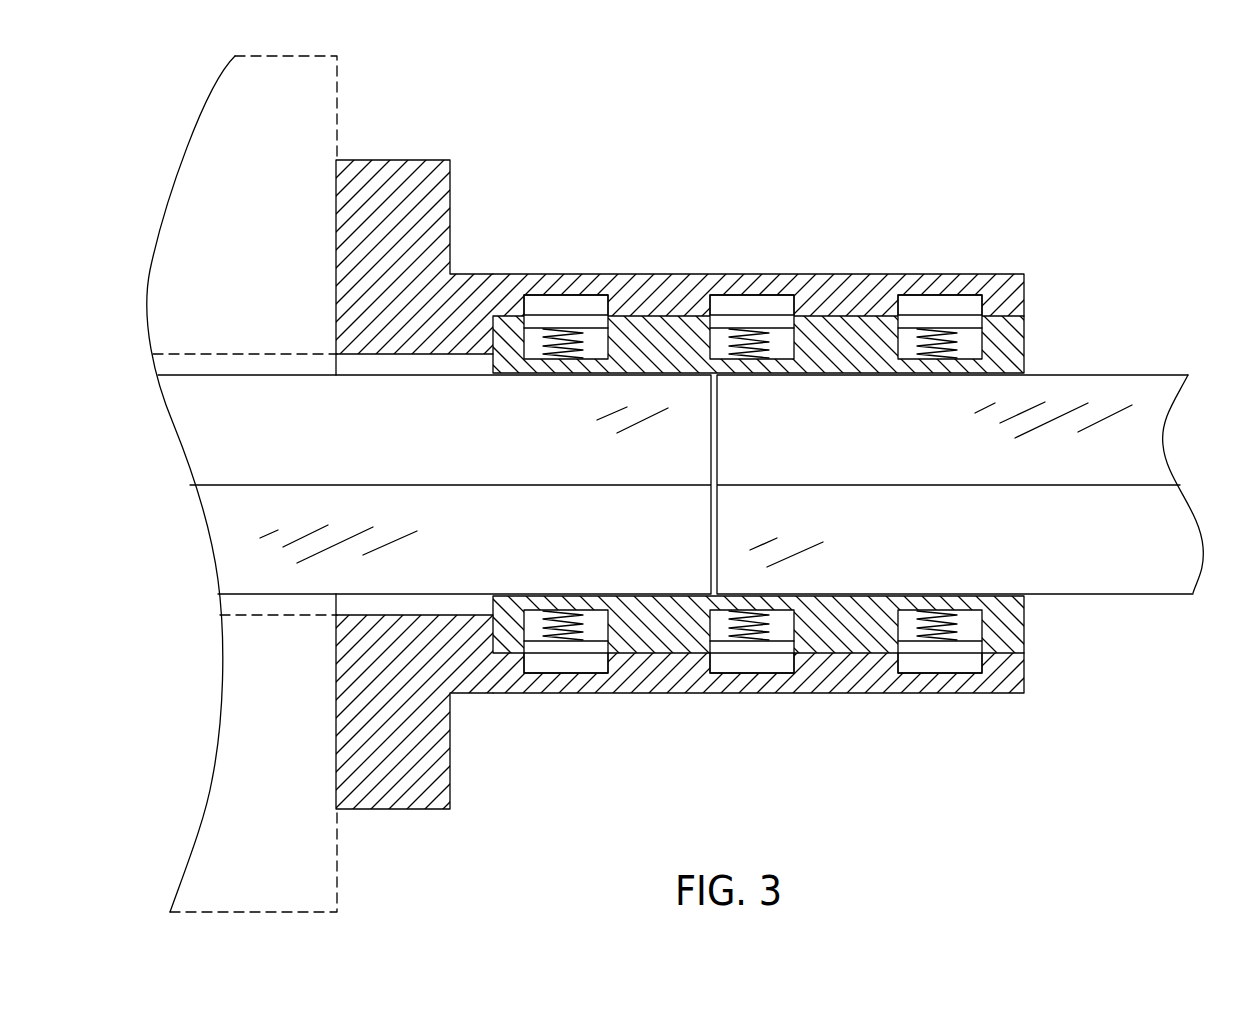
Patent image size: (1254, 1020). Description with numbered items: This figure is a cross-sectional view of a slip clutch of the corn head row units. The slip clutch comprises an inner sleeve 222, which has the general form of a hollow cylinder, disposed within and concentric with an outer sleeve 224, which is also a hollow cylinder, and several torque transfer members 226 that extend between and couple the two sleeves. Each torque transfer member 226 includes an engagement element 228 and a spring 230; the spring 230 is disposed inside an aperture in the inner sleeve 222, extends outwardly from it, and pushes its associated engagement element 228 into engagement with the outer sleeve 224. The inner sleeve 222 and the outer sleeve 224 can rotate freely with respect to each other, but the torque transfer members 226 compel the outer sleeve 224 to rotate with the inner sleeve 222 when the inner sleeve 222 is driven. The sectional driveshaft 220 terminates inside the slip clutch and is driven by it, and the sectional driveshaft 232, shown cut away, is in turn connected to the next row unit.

The driveshaft 220 is at (230, 562).
The inner sleeve 222 is at (1015, 622).
The outer sleeve 224 is at (1015, 677).
The torque transfer member 226 is at (592, 254).
The engagement element 228 is at (581, 310).
The spring 230 is at (562, 343).
The sectional driveshaft 232 is at (1183, 568).